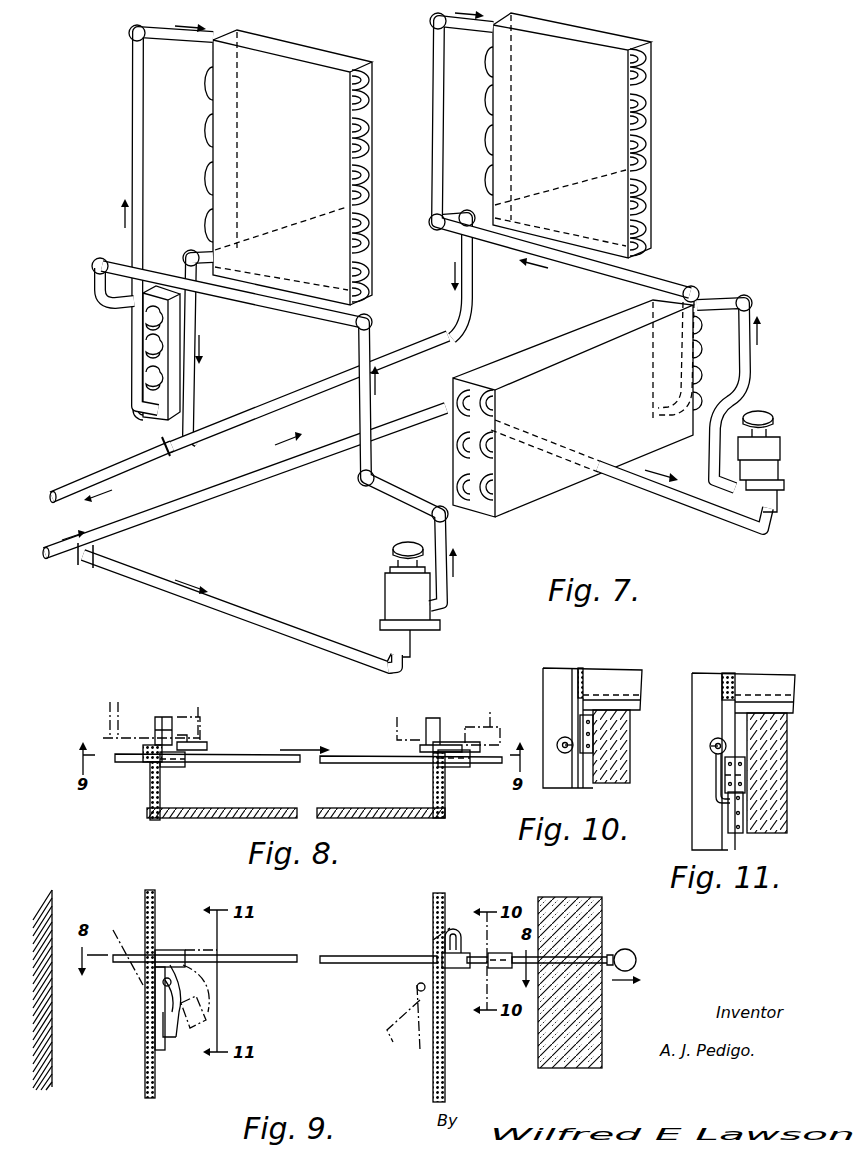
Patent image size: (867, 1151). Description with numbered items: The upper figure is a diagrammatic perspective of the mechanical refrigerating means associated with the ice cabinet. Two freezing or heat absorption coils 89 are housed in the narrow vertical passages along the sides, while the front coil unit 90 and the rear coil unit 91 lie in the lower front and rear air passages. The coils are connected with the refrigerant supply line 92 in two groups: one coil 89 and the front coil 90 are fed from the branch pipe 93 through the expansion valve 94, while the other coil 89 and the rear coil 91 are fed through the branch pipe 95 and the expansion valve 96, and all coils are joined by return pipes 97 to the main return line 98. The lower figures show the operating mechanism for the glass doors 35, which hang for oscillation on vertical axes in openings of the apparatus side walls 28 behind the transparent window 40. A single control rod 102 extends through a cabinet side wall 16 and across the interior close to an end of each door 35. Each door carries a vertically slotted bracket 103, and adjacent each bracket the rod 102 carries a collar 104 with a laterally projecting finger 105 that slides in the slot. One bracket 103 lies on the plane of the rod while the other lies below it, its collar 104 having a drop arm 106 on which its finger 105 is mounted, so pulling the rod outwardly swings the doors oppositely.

In FIG. 7, the freezing or heat absorption coil 89 is at (312, 88).
In FIG. 7, the front coil unit 90 is at (578, 338).
In FIG. 7, the rear coil unit 91 is at (263, 380).
In FIG. 7, the refrigerant supply line 92 is at (183, 504).
In FIG. 7, the branch pipe 93 is at (672, 506).
In FIG. 7, the expansion valve 94 is at (775, 440).
In FIG. 7, the branch pipe 95 is at (225, 616).
In FIG. 7, the expansion valve 96 is at (395, 584).
In FIG. 7, the return pipe 97 is at (189, 388).
In FIG. 7, the main return line 98 is at (83, 480).
In FIG. 9, the side wall 16 is at (52, 1016).
In FIG. 8, the side wall 28 is at (147, 790).
In FIG. 9, the side wall 28 is at (145, 1063).
In FIG. 8, the glass door 35 is at (157, 727).
In FIG. 9, the glass door 35 is at (115, 930).
In FIG. 10, the glass door 35 is at (612, 770).
In FIG. 11, the glass door 35 is at (770, 835).
In FIG. 8, the window 40 is at (362, 820).
In FIG. 8, the control rod 102 is at (345, 752).
In FIG. 9, the control rod 102 is at (583, 958).
In FIG. 10, the control rod 102 is at (562, 752).
In FIG. 11, the control rod 102 is at (711, 748).
In FIG. 8, the vertically slotted bracket 103 is at (185, 727).
In FIG. 9, the vertically slotted bracket 103 is at (168, 1037).
In FIG. 10, the vertically slotted bracket 103 is at (588, 715).
In FIG. 11, the vertically slotted bracket 103 is at (740, 825).
In FIG. 8, the collar 104 is at (180, 767).
In FIG. 9, the collar 104 is at (175, 950).
In FIG. 10, the collar 104 is at (560, 740).
In FIG. 11, the collar 104 is at (712, 742).
In FIG. 8, the finger 105 is at (195, 742).
In FIG. 11, the finger 105 is at (726, 782).
In FIG. 9, the drop arm 106 is at (172, 988).
In FIG. 11, the drop arm 106 is at (716, 780).